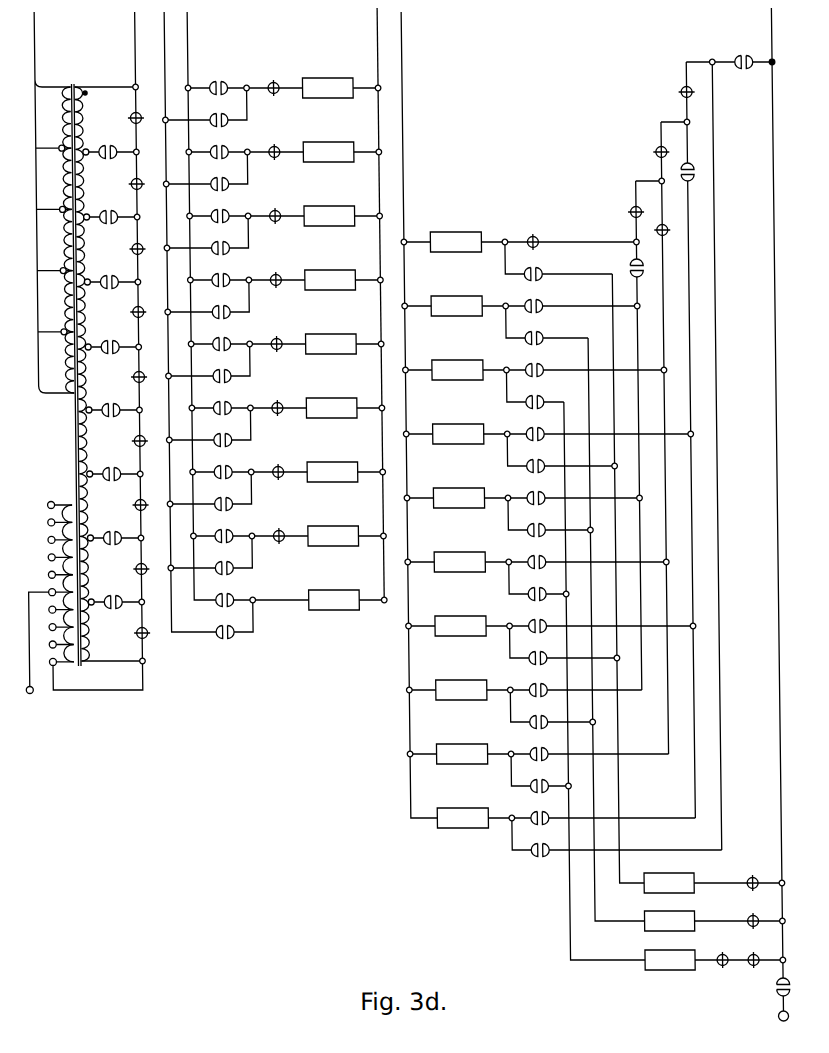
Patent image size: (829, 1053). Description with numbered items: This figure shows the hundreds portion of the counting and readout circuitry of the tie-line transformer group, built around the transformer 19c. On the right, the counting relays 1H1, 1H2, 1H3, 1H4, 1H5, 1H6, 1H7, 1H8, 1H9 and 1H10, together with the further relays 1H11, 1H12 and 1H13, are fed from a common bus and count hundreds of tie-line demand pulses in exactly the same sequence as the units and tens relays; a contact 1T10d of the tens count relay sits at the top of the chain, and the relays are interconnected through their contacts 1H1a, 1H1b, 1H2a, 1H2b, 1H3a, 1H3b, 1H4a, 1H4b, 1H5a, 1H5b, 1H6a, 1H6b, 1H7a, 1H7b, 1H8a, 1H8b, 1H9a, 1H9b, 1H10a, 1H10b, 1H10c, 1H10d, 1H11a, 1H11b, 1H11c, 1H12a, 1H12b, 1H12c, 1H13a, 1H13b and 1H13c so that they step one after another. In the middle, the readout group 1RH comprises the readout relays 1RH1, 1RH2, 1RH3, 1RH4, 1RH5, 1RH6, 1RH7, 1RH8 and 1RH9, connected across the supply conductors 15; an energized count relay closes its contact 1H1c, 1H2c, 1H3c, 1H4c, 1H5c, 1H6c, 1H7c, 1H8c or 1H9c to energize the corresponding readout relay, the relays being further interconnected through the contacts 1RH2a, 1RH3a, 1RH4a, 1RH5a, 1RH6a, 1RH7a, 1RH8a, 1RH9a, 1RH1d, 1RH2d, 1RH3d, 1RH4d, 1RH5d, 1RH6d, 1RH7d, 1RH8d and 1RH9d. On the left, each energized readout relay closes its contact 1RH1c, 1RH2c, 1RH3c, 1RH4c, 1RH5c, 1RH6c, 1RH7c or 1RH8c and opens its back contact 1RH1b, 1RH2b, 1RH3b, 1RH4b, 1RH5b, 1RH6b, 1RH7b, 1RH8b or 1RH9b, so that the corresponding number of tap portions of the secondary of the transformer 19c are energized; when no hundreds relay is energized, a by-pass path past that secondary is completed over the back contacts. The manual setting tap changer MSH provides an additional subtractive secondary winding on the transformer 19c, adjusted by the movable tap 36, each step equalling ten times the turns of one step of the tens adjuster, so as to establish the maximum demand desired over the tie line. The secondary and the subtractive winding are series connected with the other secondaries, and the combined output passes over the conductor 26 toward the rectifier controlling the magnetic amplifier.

The transformer 19c is at (84, 81).
The bus conductors 15 is at (224, 34).
The relay group bus 1RH is at (337, 36).
The manual setting tap changer MSH is at (52, 500).
The movable tap 36 is at (35, 591).
The conductor 26 is at (22, 694).
The readout relay 1RH1 is at (327, 88).
The readout relay 1RH2 is at (328, 152).
The readout relay 1RH3 is at (329, 216).
The readout relay 1RH4 is at (330, 280).
The readout relay 1RH5 is at (331, 344).
The readout relay 1RH6 is at (331, 408).
The readout relay 1RH7 is at (332, 472).
The readout relay 1RH8 is at (333, 536).
The readout relay 1RH9 is at (334, 600).
The counting relay 1H1 is at (455, 242).
The counting relay 1H2 is at (456, 306).
The counting relay 1H3 is at (457, 370).
The counting relay 1H4 is at (458, 434).
The counting relay 1H5 is at (458, 498).
The counting relay 1H6 is at (459, 562).
The counting relay 1H7 is at (460, 626).
The counting relay 1H8 is at (461, 690).
The counting relay 1H9 is at (461, 754).
The counting relay 1H10 is at (462, 818).
The relay 1H11 is at (669, 883).
The relay 1H12 is at (669, 921).
The relay 1H13 is at (670, 960).
The relay contact 1RH1b is at (129, 118).
The relay contact 1RH1c is at (120, 145).
The relay contact 1RH2b is at (129, 184).
The relay contact 1RH2c is at (120, 210).
The relay contact 1RH3b is at (129, 249).
The relay contact 1RH3c is at (120, 275).
The relay contact 1RH4b is at (129, 312).
The relay contact 1RH4c is at (120, 340).
The relay contact 1RH5b is at (129, 377).
The relay contact 1RH5c is at (120, 403).
The relay contact 1RH6b is at (129, 441).
The relay contact 1RH6c is at (120, 467).
The relay contact 1RH7b is at (129, 505).
The relay contact 1RH7c is at (120, 531).
The relay contact 1RH8b is at (129, 569).
The relay contact 1RH8c is at (117, 613).
The relay contact 1RH9b is at (138, 637).
The relay contact 1H1c is at (219, 77).
The relay contact 1H2c is at (217, 146).
The relay contact 1H3c is at (217, 210).
The relay contact 1H4c is at (217, 274).
The relay contact 1H5c is at (217, 338).
The relay contact 1H6c is at (217, 402).
The relay contact 1H7c is at (217, 466).
The relay contact 1H8c is at (217, 530).
The relay contact 1H9c is at (217, 594).
The relay contact 1RH2a is at (272, 81).
The relay contact 1RH3a is at (272, 146).
The relay contact 1RH4a is at (272, 210).
The relay contact 1RH5a is at (272, 274).
The relay contact 1RH6a is at (272, 338).
The relay contact 1RH7a is at (272, 402).
The relay contact 1RH8a is at (272, 466).
The relay contact 1RH9a is at (272, 530).
The relay contact 1RH1d is at (227, 128).
The relay contact 1RH2d is at (227, 190).
The relay contact 1RH3d is at (227, 254).
The relay contact 1RH4d is at (227, 318).
The relay contact 1RH5d is at (227, 382).
The relay contact 1RH6d is at (227, 446).
The relay contact 1RH7d is at (227, 510).
The relay contact 1RH8d is at (227, 574).
The relay contact 1RH9d is at (221, 640).
The relay contact 1H11a is at (530, 234).
The relay contact 1H1a is at (525, 272).
The relay contact 1H1b is at (531, 303).
The relay contact 1H2a is at (529, 336).
The relay contact 1H2b is at (530, 368).
The relay contact 1H3a is at (509, 405).
The relay contact 1H3b is at (526, 427).
The relay contact 1H4a is at (516, 469).
The relay contact 1H4b is at (524, 491).
The relay contact 1H5a is at (516, 533).
The relay contact 1H5b is at (524, 555).
The relay contact 1H6a is at (516, 597).
The relay contact 1H6b is at (524, 619).
The relay contact 1H7a is at (518, 661).
The relay contact 1H7b is at (523, 683).
The relay contact 1H8a is at (510, 725).
The relay contact 1H8b is at (522, 747).
The relay contact 1H9a is at (515, 789).
The relay contact 1H9b is at (522, 811).
The relay contact 1H10a is at (536, 862).
The timer contact 1T10d is at (752, 52).
The relay contact 1H10b is at (679, 93).
The relay contact 1H13a is at (652, 153).
The relay contact 1H13b is at (693, 172).
The relay contact 1H12a is at (625, 212).
The relay contact 1H12b is at (654, 231).
The relay contact 1H11b is at (629, 264).
The relay contact 1H12c is at (745, 875).
The relay contact 1H13c is at (742, 914).
The relay contact 1H10c is at (752, 954).
The relay contact 1H11c is at (709, 971).
The relay contact 1H10d is at (758, 989).